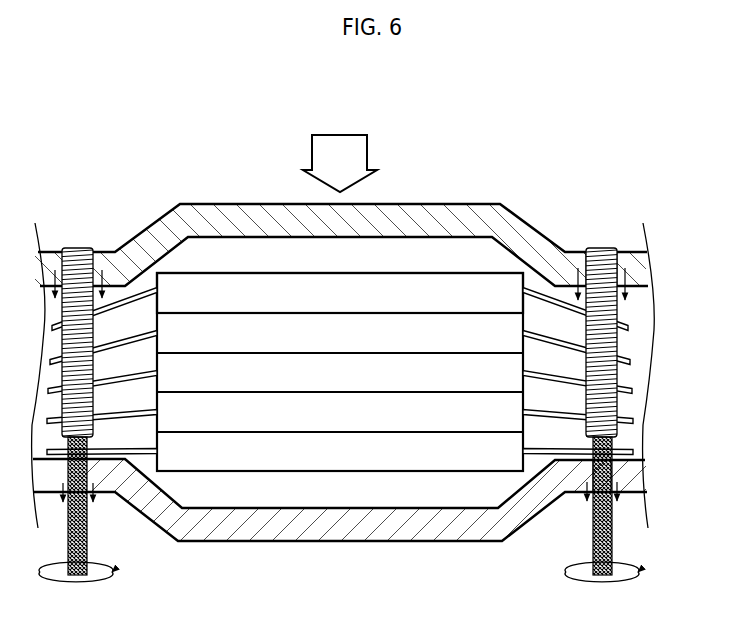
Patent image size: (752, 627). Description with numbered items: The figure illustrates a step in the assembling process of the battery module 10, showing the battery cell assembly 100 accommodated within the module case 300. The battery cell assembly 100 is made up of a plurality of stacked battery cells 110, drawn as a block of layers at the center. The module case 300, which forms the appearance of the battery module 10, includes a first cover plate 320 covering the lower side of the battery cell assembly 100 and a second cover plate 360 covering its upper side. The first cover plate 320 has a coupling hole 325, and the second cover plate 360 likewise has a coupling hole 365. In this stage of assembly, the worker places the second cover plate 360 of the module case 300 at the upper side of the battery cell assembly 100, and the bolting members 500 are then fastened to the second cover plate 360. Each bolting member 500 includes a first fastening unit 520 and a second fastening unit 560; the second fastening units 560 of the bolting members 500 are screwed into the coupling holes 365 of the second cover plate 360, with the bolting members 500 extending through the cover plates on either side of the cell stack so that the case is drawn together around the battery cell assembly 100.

The battery module 10 is at (146, 139).
The battery cell assembly 100 is at (384, 262).
The battery cell 110 is at (243, 295).
The module case 300 is at (306, 557).
The first cover plate 320 is at (634, 477).
The coupling hole 325 is at (612, 472).
The second cover plate 360 is at (634, 272).
The coupling hole 365 is at (619, 264).
The bolting member 500 is at (108, 544).
The first fastening unit 520 is at (612, 540).
The second fastening unit 560 is at (619, 340).